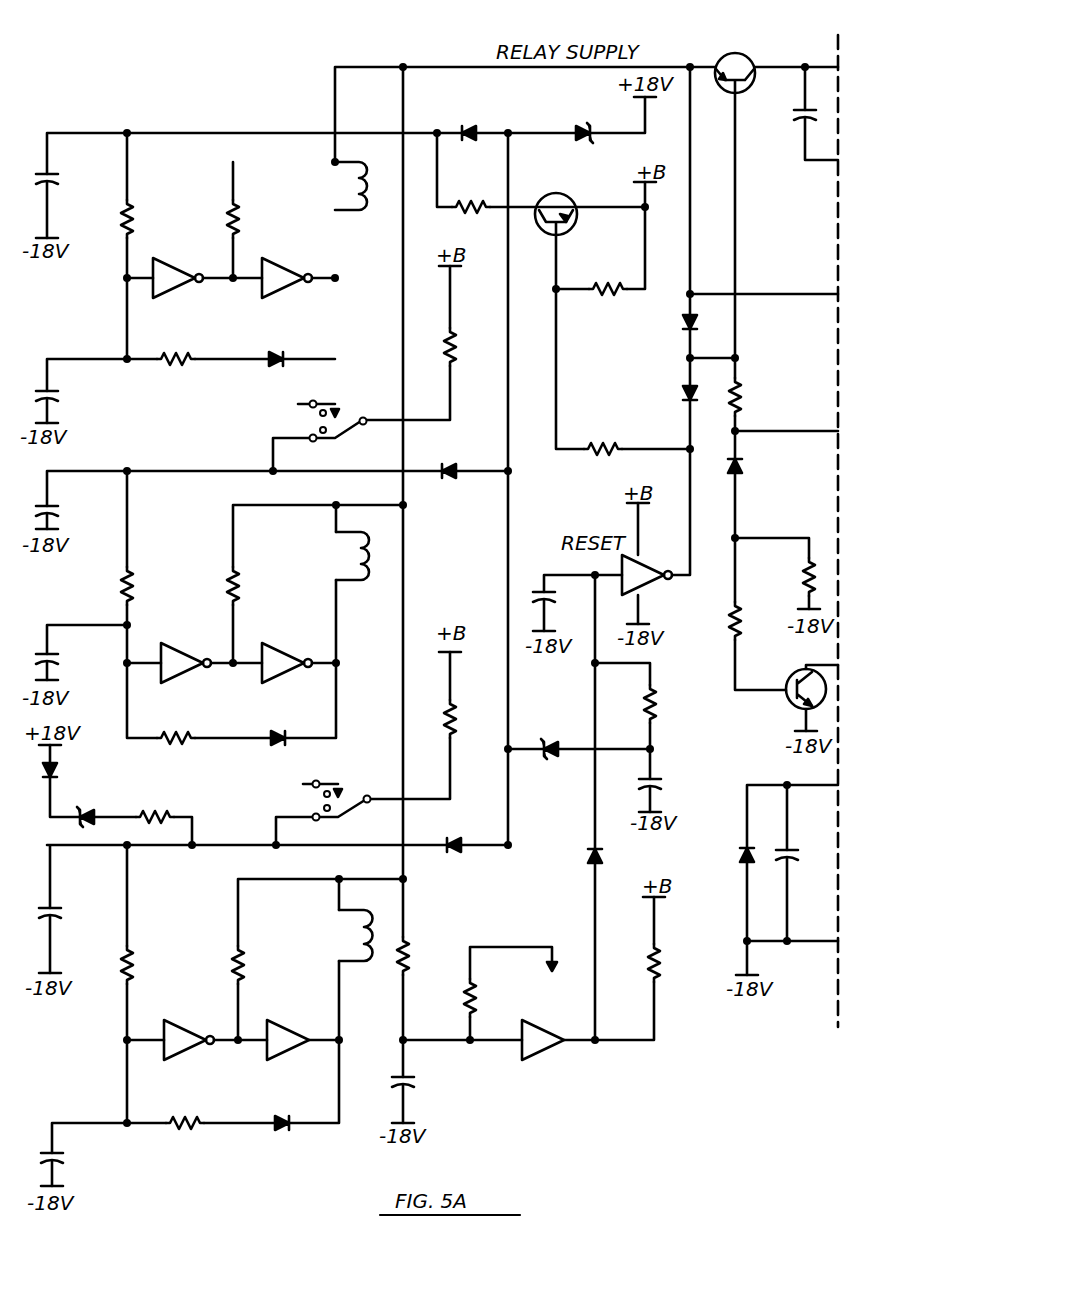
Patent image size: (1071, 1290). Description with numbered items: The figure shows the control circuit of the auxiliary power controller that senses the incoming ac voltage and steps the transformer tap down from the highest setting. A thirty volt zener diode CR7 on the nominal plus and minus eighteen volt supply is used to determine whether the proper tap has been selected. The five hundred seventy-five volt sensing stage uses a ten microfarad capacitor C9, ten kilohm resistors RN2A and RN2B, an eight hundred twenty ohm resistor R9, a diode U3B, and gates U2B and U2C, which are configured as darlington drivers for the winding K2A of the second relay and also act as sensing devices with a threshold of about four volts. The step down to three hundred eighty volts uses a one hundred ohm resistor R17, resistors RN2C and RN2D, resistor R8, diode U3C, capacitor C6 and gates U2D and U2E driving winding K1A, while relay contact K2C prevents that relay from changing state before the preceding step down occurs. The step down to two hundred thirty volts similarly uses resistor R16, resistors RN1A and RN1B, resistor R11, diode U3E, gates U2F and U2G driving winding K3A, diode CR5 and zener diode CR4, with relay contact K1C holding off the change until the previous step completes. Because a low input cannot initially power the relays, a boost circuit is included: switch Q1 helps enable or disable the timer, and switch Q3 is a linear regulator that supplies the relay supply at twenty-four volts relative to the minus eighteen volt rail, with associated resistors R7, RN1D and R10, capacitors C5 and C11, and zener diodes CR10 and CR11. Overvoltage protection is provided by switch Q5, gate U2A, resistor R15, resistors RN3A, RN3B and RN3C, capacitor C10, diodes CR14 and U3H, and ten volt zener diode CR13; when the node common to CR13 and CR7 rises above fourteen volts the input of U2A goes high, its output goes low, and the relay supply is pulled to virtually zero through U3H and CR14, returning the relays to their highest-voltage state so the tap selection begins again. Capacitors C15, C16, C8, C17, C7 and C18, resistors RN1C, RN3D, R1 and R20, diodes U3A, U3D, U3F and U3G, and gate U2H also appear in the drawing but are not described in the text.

The capacitor C9 is at (64, 178).
The capacitor C15 is at (68, 397).
The capacitor C6 is at (62, 511).
The capacitor C16 is at (69, 659).
The capacitor C8 is at (67, 915).
The capacitor C17 is at (76, 1160).
The capacitor C7 is at (422, 1081).
The capacitor C18 is at (566, 598).
The capacitor C10 is at (673, 781).
The capacitor C11 is at (789, 114).
The capacitor C5 is at (804, 858).
The resistor RN2A is at (157, 219).
The resistor RN2B is at (262, 219).
The resistor RN2C is at (159, 586).
The resistor RN2D is at (266, 586).
The resistor RN1A is at (160, 965).
The resistor RN1B is at (268, 965).
The resistor network RN1 section C RN1C is at (435, 951).
The resistor RN1D is at (705, 620).
The resistor RN3A is at (599, 278).
The resistor RN3B is at (607, 436).
The resistor RN3C is at (682, 704).
The resistor network RN3 section D RN3D is at (687, 963).
The resistor R1 is at (488, 998).
The resistor R7 is at (792, 577).
The resistor R8 is at (178, 728).
The resistor R9 is at (176, 347).
The resistor R10 is at (759, 397).
The resistor R11 is at (185, 1110).
The resistor R15 is at (471, 196).
The resistor R16 is at (474, 719).
The resistor R17 is at (473, 347).
The resistor R20 is at (161, 805).
The diode U3A is at (451, 833).
The diode U3B is at (279, 346).
The diode U3C is at (282, 729).
The diode U3D is at (456, 460).
The diode U3E is at (289, 1111).
The diode U3F is at (464, 120).
The diode U3G is at (568, 862).
The diode U3H is at (665, 390).
The zener diode CR4 is at (83, 806).
The diode CR5 is at (72, 773).
The zener diode CR7 is at (582, 122).
The zener diode CR10 is at (716, 856).
The zener diode CR11 is at (766, 467).
The zener diode CR13 is at (556, 738).
The diode CR14 is at (658, 324).
The gate U2A is at (654, 569).
The gate U2B is at (180, 267).
The gate U2C is at (287, 268).
The gate U2D is at (189, 655).
The gate U2E is at (290, 655).
The gate U2F is at (189, 1032).
The gate U2G is at (295, 1032).
The buffer U2H is at (549, 1031).
The relay winding K2A is at (340, 186).
The relay winding K1A is at (342, 556).
The relay winding K3A is at (344, 935).
The relay contact K2C is at (340, 411).
The relay contact K1C is at (351, 793).
The switch Q1 is at (790, 695).
The linear regulator switch Q3 is at (741, 57).
The switch Q5 is at (570, 206).